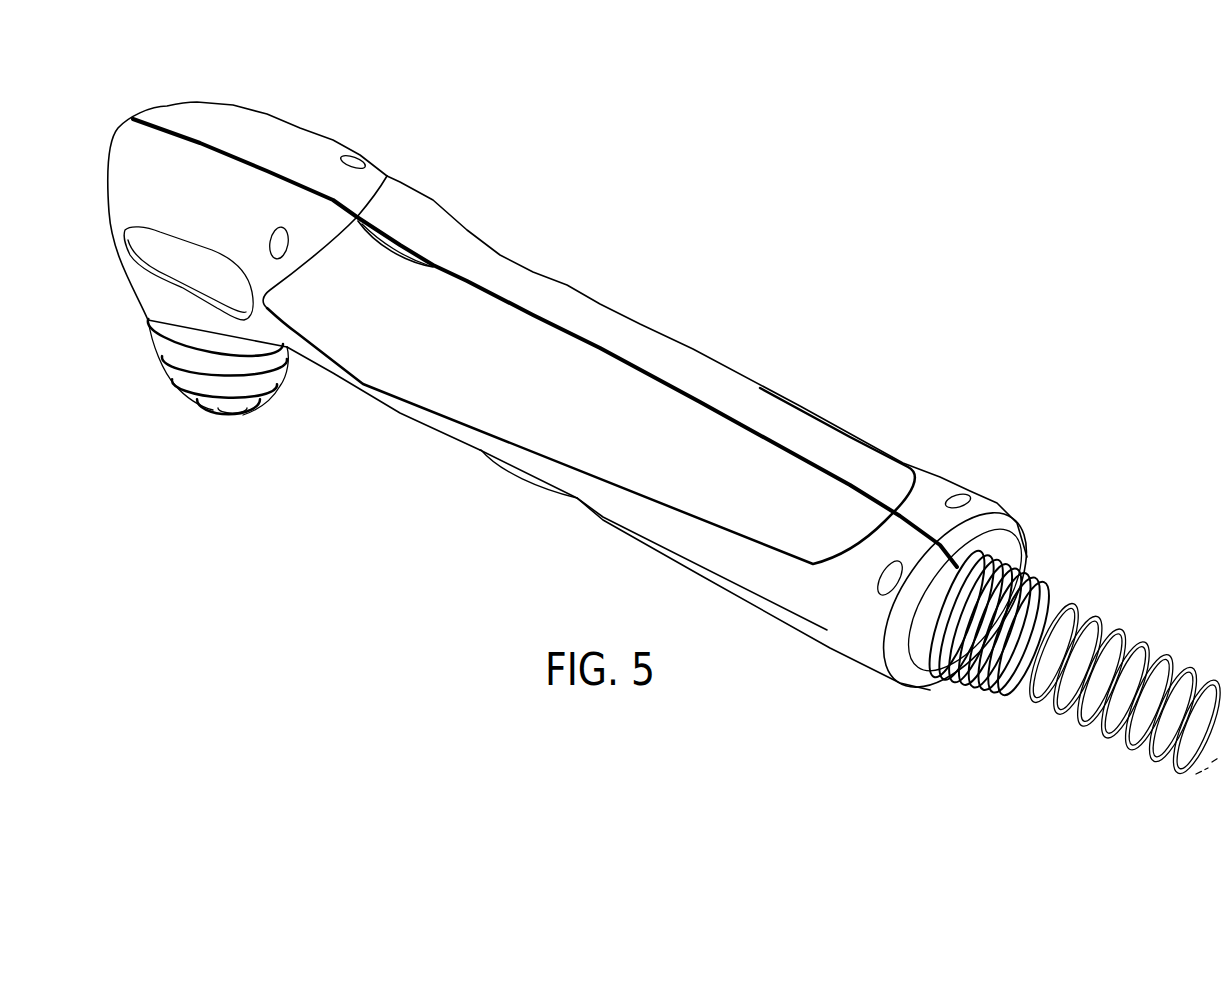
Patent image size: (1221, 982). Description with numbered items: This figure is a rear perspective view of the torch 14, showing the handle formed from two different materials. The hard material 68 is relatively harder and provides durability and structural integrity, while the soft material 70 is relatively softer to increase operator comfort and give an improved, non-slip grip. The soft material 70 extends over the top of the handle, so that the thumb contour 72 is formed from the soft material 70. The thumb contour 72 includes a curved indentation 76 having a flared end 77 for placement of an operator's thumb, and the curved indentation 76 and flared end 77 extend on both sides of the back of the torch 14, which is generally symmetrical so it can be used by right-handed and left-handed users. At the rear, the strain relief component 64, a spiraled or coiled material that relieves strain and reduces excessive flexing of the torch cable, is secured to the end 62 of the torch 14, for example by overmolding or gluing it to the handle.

The torch 14 is at (905, 237).
The end 62 is at (1020, 525).
The strain relief component 64 is at (1120, 638).
The hard material 68 is at (830, 605).
The soft material 70 is at (693, 349).
The thumb contour 72 is at (470, 213).
The curved indentation 76 is at (415, 208).
The flared end 77 is at (400, 182).